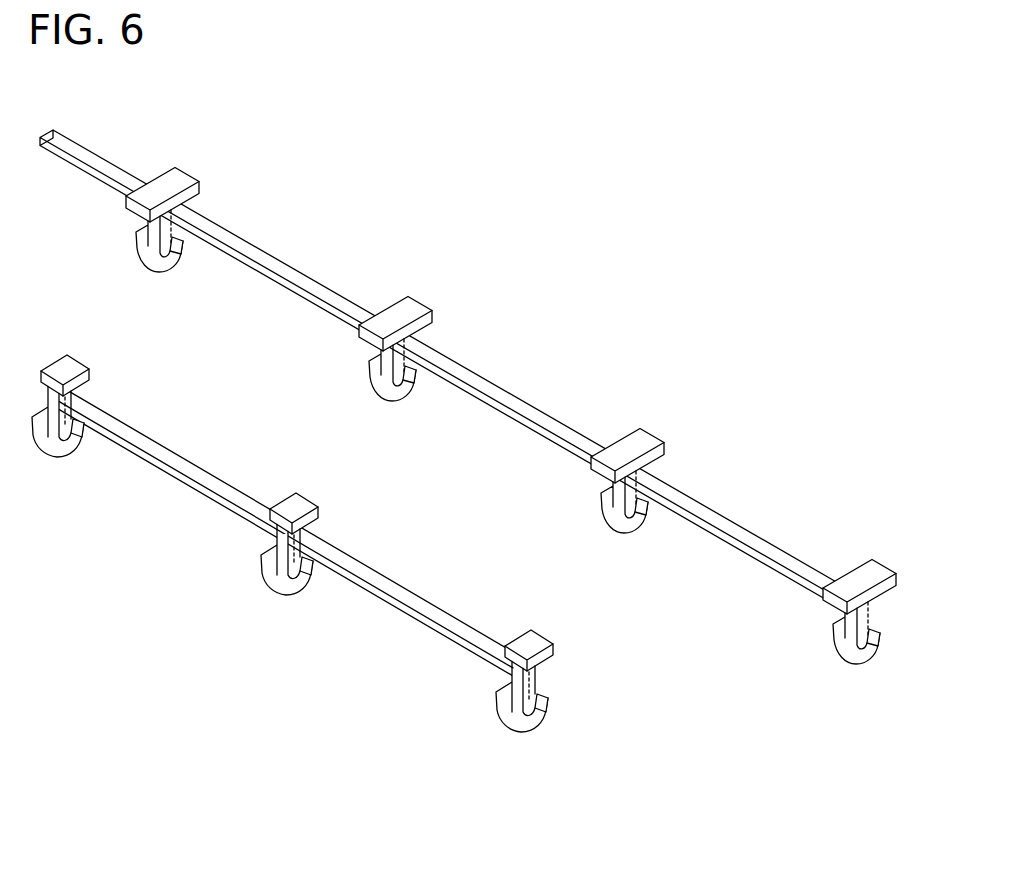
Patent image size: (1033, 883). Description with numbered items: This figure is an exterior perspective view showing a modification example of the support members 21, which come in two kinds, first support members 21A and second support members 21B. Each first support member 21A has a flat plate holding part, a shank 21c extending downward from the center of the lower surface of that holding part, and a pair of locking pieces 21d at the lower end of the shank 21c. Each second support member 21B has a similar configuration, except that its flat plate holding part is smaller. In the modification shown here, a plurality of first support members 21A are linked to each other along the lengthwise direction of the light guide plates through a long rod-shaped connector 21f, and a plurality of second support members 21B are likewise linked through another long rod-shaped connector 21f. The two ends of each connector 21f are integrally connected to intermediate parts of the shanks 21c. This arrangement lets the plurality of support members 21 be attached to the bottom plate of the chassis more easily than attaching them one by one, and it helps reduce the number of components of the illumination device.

The support member 21 is at (461, 375).
The first support member 21A is at (157, 173).
The second support member 21B is at (525, 635).
The shank 21c is at (138, 228).
The locking piece 21d is at (158, 269).
The connector 21f is at (60, 134).